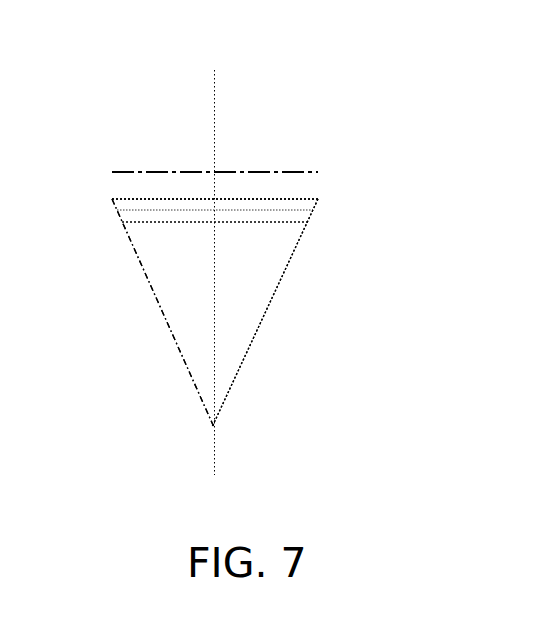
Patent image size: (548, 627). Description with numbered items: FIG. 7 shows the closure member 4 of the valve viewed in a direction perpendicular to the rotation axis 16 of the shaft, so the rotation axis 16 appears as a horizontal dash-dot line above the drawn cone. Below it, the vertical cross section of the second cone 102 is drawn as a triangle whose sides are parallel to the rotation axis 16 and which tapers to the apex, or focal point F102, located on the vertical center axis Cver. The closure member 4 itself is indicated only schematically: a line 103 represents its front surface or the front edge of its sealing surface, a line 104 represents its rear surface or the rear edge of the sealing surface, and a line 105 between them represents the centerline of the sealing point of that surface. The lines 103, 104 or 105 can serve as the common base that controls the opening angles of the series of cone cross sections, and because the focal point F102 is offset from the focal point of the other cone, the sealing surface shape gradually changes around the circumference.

The closure member 4 is at (98, 186).
The rotation axis 16 is at (180, 166).
The second cone 102 is at (272, 320).
The line representing a front surface 103 is at (108, 223).
The line representing a rear surface 104 is at (320, 200).
The line representing a centerline of a sealing point 105 is at (252, 211).
The focal point F102 is at (195, 422).
The vertical center axis Cver is at (216, 370).